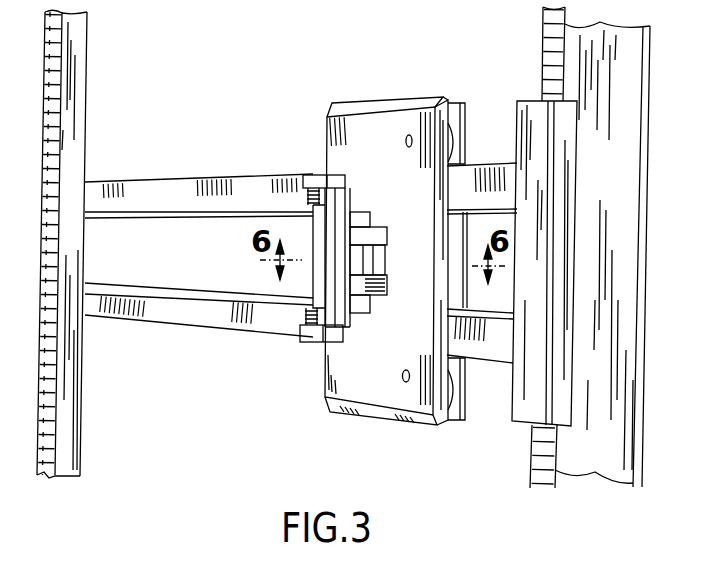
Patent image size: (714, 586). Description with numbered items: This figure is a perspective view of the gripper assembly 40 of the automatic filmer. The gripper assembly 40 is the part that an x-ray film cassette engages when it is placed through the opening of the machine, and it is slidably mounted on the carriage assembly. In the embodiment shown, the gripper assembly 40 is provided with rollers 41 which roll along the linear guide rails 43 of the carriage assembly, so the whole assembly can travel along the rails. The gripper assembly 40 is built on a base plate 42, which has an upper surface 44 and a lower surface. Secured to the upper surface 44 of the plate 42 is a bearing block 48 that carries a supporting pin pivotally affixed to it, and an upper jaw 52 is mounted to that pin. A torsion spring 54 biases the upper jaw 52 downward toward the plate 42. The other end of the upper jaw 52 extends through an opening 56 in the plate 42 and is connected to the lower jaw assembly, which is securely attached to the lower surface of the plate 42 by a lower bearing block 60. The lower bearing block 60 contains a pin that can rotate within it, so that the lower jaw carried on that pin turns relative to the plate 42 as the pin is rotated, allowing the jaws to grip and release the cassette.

The gripper assembly 40 is at (367, 36).
The rollers 41 is at (463, 385).
The base plate 42 is at (438, 98).
The linear guide rails 43 is at (214, 178).
The upper surface 44 is at (375, 128).
The bearing block 48 is at (318, 174).
The upper jaw 52 is at (350, 196).
The torsion spring 54 is at (322, 316).
The opening 56 is at (386, 229).
The lower bearing block 60 is at (358, 213).